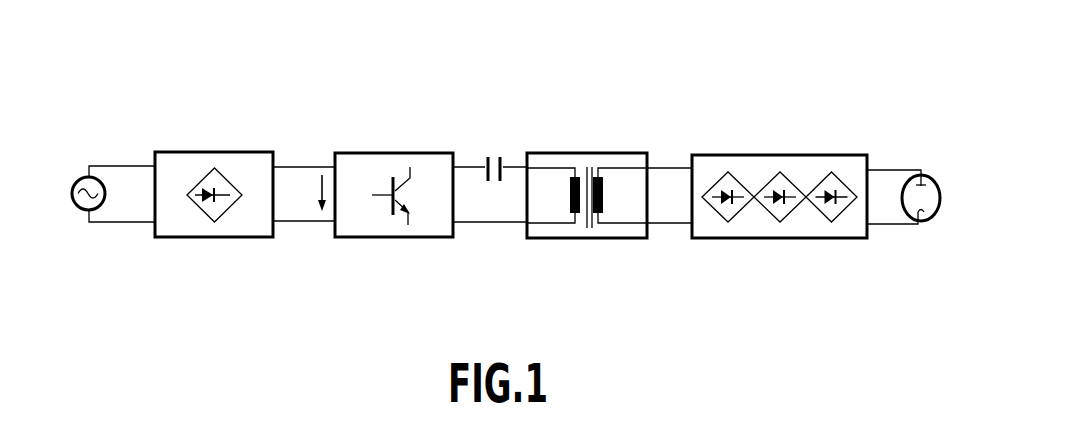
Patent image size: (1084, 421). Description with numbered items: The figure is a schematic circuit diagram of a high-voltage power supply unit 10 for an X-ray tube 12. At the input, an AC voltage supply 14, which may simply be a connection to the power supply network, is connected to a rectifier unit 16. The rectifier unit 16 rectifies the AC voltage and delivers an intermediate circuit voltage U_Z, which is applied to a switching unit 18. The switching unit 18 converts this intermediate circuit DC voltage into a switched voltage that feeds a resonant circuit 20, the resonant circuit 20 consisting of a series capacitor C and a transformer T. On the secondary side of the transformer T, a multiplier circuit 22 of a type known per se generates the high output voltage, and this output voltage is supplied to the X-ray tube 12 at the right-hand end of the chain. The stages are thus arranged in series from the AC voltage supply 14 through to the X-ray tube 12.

The power supply unit 10 is at (510, 88).
The X-ray tube 12 is at (927, 175).
The AC voltage supply 14 is at (77, 210).
The rectifier unit 16 is at (214, 237).
The switching unit 18 is at (394, 237).
The resonant circuit 20 is at (647, 258).
The multiplier circuit 22 is at (729, 240).